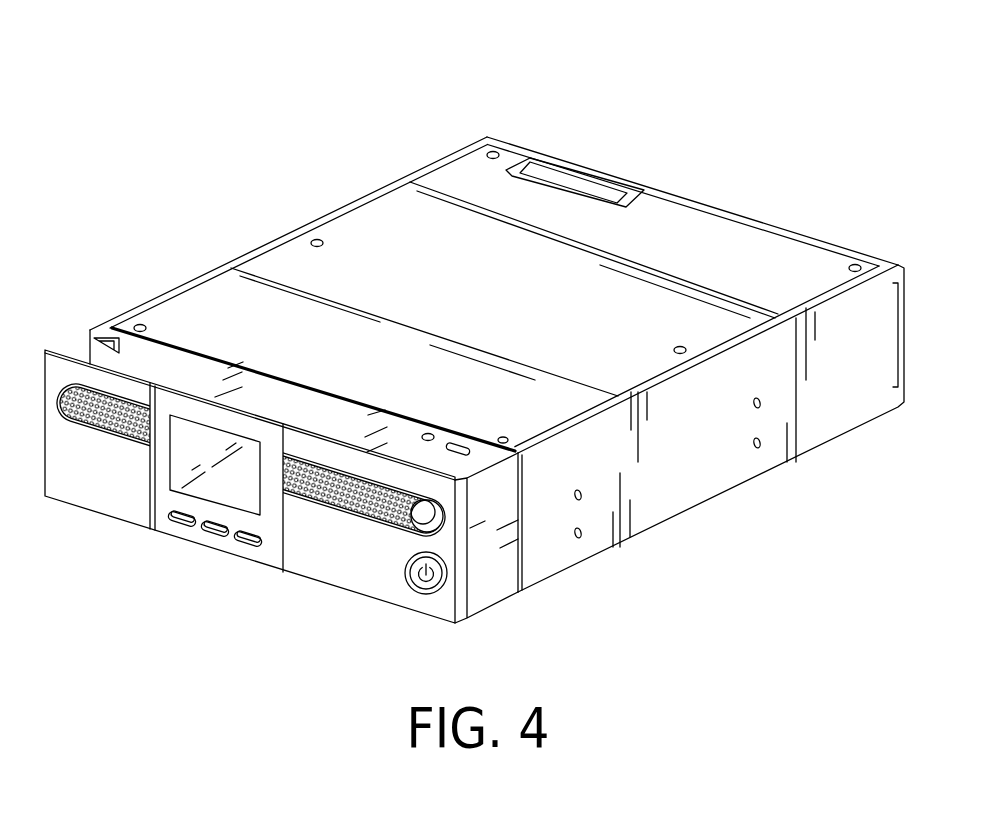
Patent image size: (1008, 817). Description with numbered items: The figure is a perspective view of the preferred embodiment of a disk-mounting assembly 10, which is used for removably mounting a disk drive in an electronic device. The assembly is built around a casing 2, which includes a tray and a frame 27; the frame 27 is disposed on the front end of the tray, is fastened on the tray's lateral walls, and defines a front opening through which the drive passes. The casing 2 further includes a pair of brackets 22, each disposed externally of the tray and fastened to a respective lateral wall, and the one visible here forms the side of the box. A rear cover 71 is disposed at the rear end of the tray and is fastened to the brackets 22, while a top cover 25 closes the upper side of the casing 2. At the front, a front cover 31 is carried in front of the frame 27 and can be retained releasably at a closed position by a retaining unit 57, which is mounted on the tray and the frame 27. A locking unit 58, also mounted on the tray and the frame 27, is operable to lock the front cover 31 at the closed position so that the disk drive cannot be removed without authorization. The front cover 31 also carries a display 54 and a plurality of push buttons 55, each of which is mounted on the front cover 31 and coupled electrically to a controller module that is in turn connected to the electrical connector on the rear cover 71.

The disk-mounting assembly 10 is at (360, 141).
The casing 2 is at (145, 350).
The top cover 25 is at (363, 246).
The rear cover 71 is at (755, 222).
The brackets 22 is at (713, 462).
The frame 27 is at (497, 583).
The front cover 31 is at (107, 490).
The display 54 is at (210, 487).
The push buttons 55 is at (247, 540).
The retaining unit 57 is at (418, 517).
The locking unit 58 is at (414, 577).